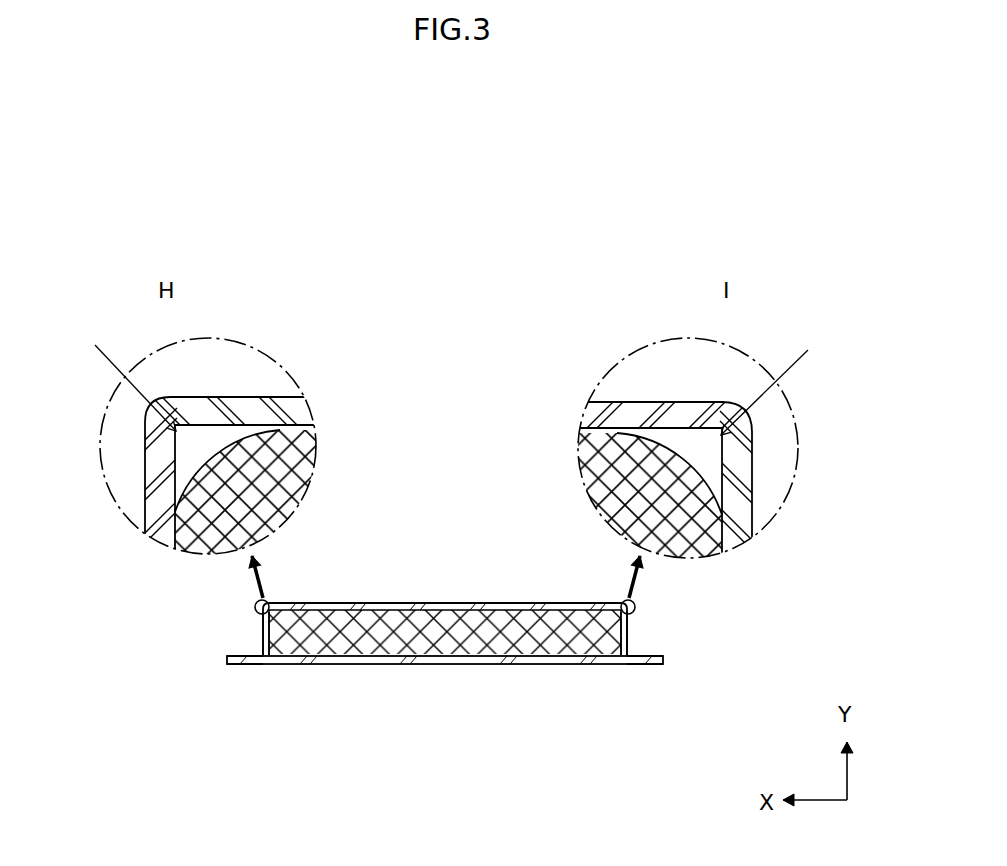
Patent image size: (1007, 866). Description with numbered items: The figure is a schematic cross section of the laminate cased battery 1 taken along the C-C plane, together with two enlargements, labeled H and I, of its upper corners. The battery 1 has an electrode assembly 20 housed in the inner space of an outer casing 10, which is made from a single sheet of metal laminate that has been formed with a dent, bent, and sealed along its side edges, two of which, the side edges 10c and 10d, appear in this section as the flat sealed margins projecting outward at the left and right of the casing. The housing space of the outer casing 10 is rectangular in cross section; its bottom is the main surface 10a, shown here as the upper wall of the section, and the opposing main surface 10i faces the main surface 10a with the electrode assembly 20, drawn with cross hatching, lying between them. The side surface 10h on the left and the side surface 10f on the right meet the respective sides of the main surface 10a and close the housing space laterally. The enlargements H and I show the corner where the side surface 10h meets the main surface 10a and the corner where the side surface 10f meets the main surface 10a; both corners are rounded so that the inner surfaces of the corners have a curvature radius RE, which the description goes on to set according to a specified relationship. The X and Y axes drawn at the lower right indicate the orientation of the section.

The laminate cased battery 1 is at (172, 226).
The outer casing 10 is at (472, 605).
The main surface 10a is at (343, 602).
The side edge 10c is at (238, 650).
The side edge 10d is at (658, 648).
The side surface 10f is at (631, 632).
The side surface 10h is at (262, 630).
The main surface 10i is at (504, 667).
The electrode assembly 20 is at (383, 634).
The curvature radius RE is at (451, 383).